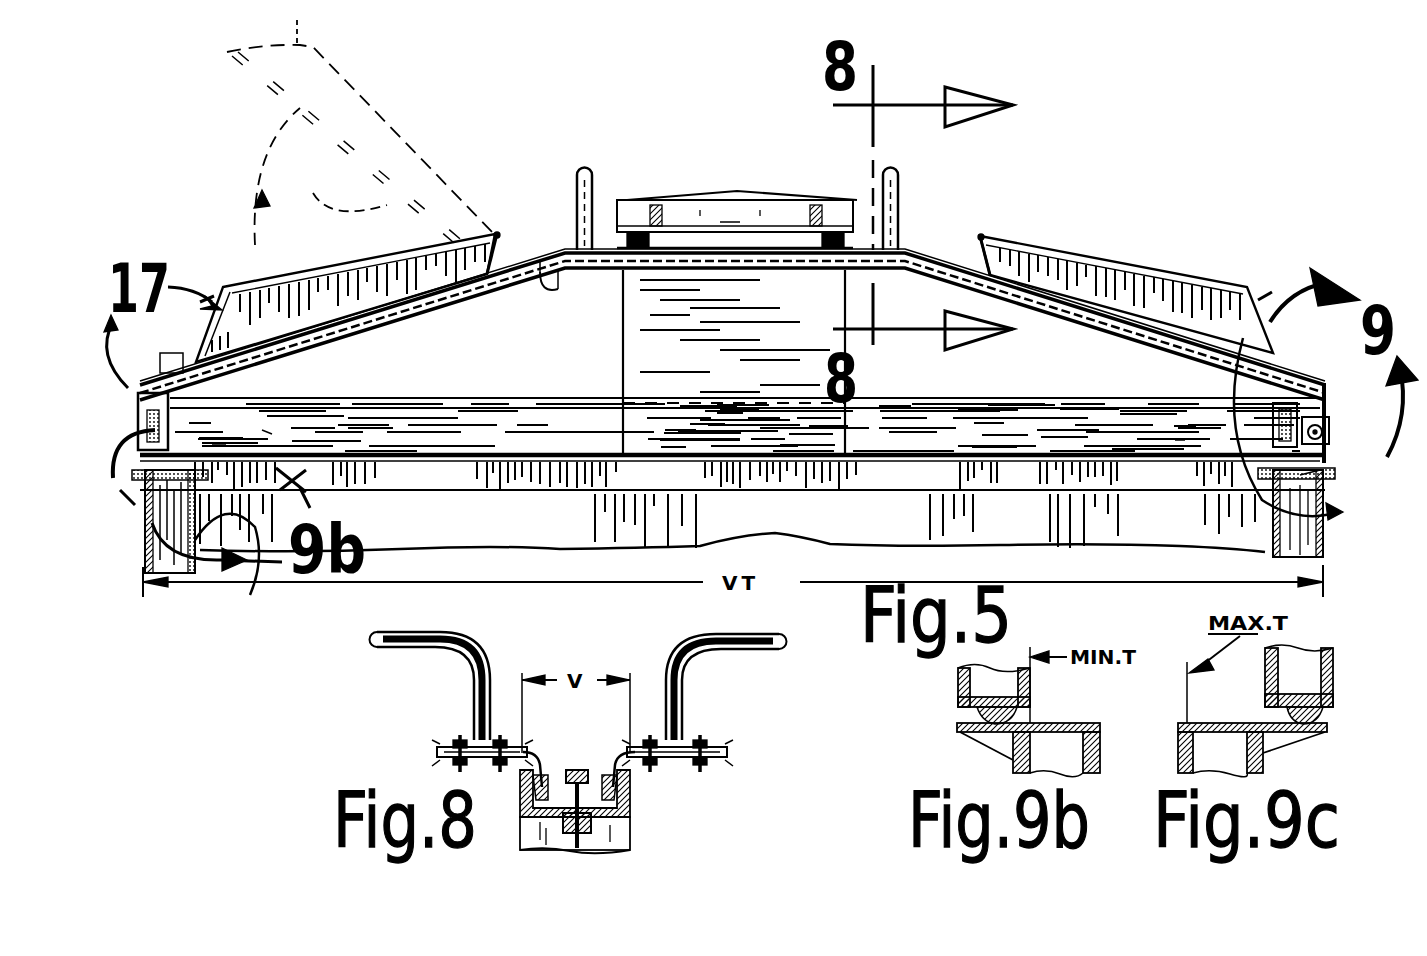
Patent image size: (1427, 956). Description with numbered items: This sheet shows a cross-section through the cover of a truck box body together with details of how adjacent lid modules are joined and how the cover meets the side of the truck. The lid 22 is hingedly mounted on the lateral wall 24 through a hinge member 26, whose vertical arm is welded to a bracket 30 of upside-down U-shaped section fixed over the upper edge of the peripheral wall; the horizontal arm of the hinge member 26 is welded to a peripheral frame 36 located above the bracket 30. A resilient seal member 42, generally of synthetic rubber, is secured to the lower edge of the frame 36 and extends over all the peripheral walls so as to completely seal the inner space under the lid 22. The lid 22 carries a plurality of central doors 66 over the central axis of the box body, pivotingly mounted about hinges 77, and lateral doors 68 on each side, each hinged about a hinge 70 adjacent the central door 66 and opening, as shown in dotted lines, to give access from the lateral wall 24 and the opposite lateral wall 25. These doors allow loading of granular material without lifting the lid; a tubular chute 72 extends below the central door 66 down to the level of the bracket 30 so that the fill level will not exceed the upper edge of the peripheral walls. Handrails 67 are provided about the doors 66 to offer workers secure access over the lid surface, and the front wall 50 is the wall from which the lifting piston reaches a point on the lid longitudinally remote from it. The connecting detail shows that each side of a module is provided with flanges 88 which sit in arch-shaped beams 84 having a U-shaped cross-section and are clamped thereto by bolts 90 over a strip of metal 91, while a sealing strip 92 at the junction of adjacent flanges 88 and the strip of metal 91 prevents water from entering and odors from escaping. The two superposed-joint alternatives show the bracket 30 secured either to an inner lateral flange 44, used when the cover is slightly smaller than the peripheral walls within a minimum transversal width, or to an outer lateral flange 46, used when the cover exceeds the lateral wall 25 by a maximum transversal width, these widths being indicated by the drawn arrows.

In FIG. 5, the lid 22 is at (952, 221).
In FIG. 5, the lateral wall 24 is at (1333, 550).
In FIG. 5, the lateral wall 25 is at (254, 545).
In FIG. 9B, the lateral wall 25 is at (1030, 771).
In FIG. 9C, the lateral wall 25 is at (1190, 768).
In FIG. 5, the hinge member 26 is at (1342, 424).
In FIG. 5, the bracket 30 is at (1337, 465).
In FIG. 9B, the bracket 30 is at (1080, 722).
In FIG. 9C, the bracket 30 is at (1207, 722).
In FIG. 5, the peripheral frame 36 is at (217, 447).
In FIG. 9B, the peripheral frame 36 is at (1032, 676).
In FIG. 9C, the peripheral frame 36 is at (1336, 675).
In FIG. 5, the resilient seal member 42 is at (270, 432).
In FIG. 9B, the inner lateral flange 44 is at (985, 742).
In FIG. 9C, the outer lateral flange 46 is at (1325, 736).
In FIG. 5, the front wall 50 is at (403, 527).
In FIG. 5, the central doors 66 is at (710, 214).
In FIG. 5, the handrails 67 is at (585, 168).
In FIG. 5, the lateral doors 68 is at (332, 263).
In FIG. 5, the hinge 70 is at (497, 234).
In FIG. 5, the tubular chute 72 is at (645, 298).
In FIG. 5, the hinges 77 is at (643, 213).
In FIG. 5, the arch-shaped beams 84 is at (541, 262).
In FIG. 8, the arch-shaped beams 84 is at (630, 830).
In FIG. 8, the flanges 88 is at (607, 767).
In FIG. 8, the bolts 90 is at (567, 783).
In FIG. 8, the strip of metal 91 is at (587, 780).
In FIG. 8, the sealing strip 92 is at (535, 760).